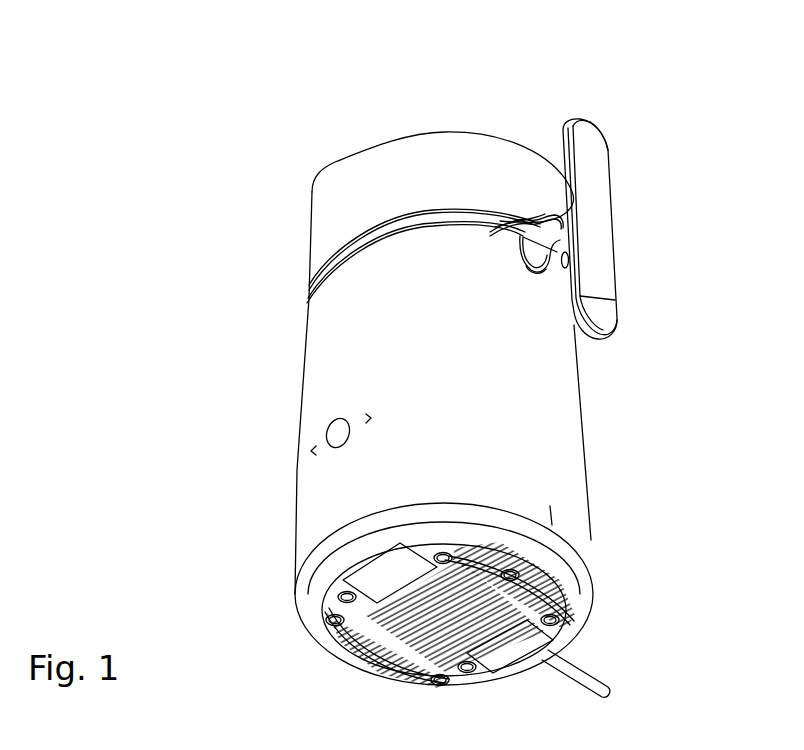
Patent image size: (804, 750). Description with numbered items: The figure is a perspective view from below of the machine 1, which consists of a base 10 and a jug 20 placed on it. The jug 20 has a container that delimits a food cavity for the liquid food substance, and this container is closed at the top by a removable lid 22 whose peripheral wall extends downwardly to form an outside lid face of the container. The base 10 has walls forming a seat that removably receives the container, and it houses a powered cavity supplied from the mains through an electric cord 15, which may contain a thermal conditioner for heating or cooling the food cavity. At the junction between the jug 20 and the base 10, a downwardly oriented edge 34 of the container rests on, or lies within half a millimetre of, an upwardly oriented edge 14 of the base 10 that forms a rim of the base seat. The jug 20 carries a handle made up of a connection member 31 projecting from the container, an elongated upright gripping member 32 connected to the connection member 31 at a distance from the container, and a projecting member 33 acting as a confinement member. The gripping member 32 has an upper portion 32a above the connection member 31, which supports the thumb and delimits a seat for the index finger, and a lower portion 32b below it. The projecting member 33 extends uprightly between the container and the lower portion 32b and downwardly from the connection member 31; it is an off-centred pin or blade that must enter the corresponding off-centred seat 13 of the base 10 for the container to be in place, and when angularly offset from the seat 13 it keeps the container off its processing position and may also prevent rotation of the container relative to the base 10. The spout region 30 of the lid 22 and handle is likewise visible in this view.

The machine 1 is at (183, 105).
The base 10 is at (318, 378).
The off-centred seat 13 is at (543, 274).
The upwardly oriented edge of base 14 is at (367, 238).
The electric cord 15 is at (585, 677).
The jug 20 is at (305, 243).
The removable lid 22 is at (388, 160).
The spout 30 is at (560, 201).
The connection member 31 is at (537, 216).
The gripping member 32 is at (608, 203).
The upper portion of gripping member 32a is at (588, 148).
The lower portion of gripping member 32b is at (602, 292).
The projecting member 33 is at (530, 263).
The downwardly oriented edge of container 34 is at (380, 237).